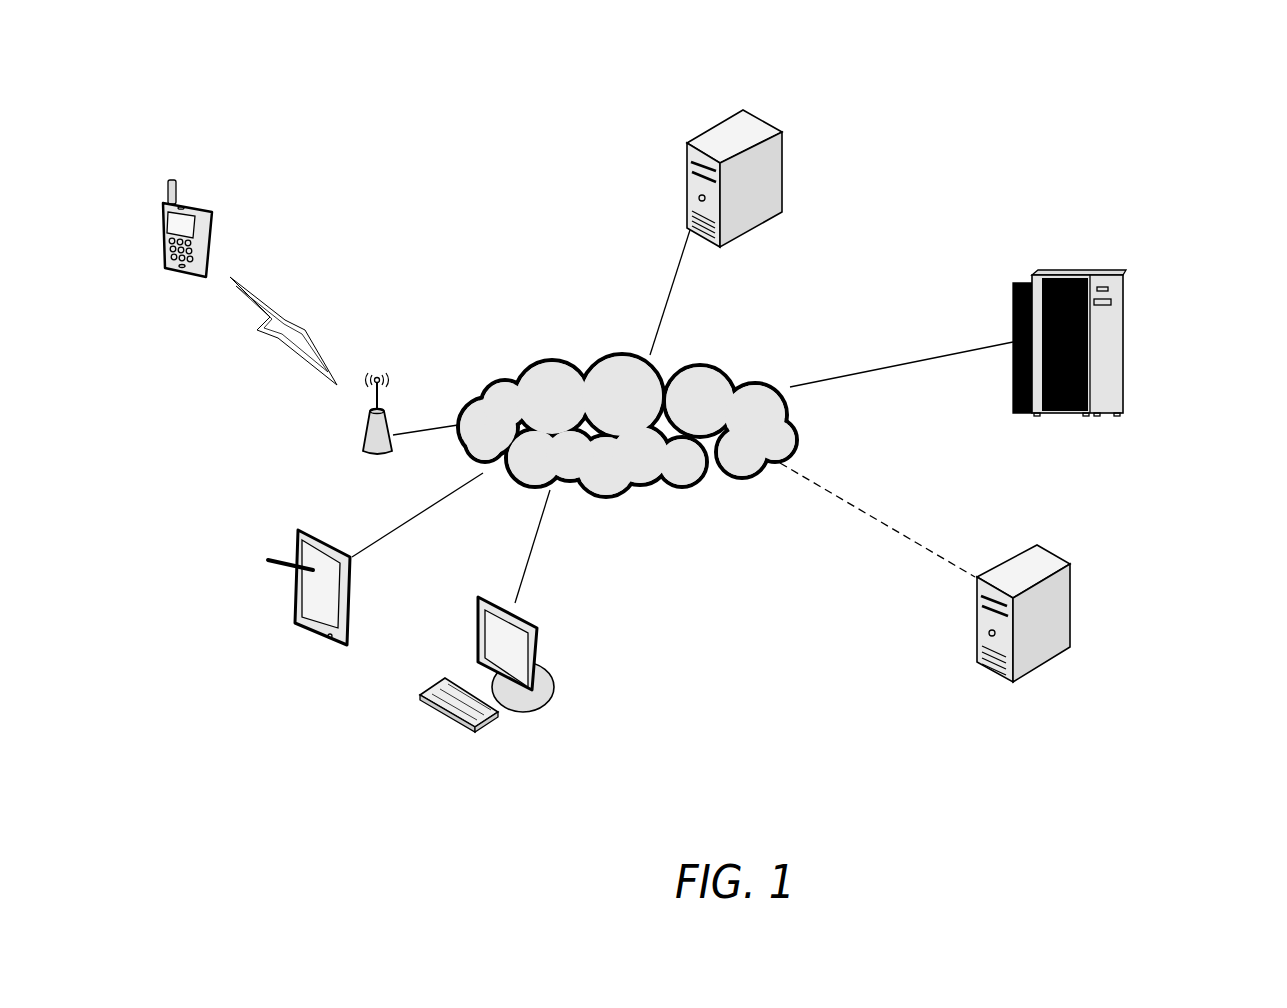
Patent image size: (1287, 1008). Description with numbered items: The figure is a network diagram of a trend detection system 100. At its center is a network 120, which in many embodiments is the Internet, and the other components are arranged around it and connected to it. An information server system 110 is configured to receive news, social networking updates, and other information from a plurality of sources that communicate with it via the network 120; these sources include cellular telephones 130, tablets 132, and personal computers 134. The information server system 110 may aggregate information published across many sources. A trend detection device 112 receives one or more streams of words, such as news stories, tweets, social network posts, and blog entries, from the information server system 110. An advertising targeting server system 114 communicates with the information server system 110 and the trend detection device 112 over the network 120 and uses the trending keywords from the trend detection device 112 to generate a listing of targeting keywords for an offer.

The trend detection system 100 is at (1015, 143).
The information server system 110 is at (693, 135).
The trend detection device 112 is at (1123, 343).
The advertising targeting server system 114 is at (1071, 563).
The network 120 is at (663, 483).
The cellular telephones 130 is at (202, 208).
The tablets 132 is at (297, 622).
The personal computers 134 is at (418, 695).